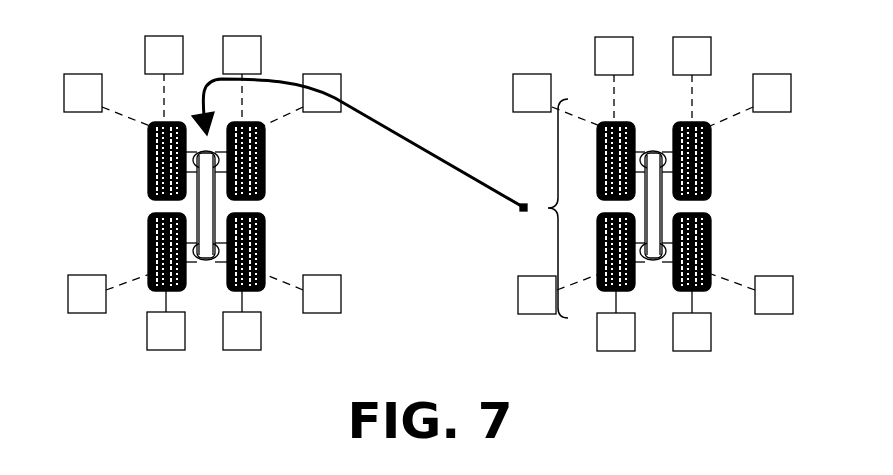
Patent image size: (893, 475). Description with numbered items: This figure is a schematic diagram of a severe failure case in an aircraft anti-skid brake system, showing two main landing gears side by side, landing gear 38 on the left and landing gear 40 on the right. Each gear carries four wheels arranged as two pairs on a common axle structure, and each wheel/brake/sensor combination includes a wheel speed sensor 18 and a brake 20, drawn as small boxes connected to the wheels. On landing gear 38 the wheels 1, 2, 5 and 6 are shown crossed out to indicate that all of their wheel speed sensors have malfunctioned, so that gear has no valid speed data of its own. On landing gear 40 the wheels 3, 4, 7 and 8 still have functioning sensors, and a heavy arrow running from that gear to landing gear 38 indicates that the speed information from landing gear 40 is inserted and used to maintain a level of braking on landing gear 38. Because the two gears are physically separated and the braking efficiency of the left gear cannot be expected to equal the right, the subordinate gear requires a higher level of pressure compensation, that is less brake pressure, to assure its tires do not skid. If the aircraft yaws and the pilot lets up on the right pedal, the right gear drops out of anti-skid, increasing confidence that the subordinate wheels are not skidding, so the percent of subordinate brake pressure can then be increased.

The wheel speed sensor 18 is at (145, 58).
The brake 20 is at (64, 85).
The landing gear 38 is at (201, 380).
The landing gear 40 is at (663, 376).
The wheel 1 is at (134, 144).
The wheel 2 is at (286, 144).
The wheel 5 is at (136, 230).
The wheel 6 is at (288, 230).
The wheel 3 is at (605, 161).
The wheel 4 is at (702, 161).
The wheel 7 is at (605, 252).
The wheel 8 is at (702, 252).